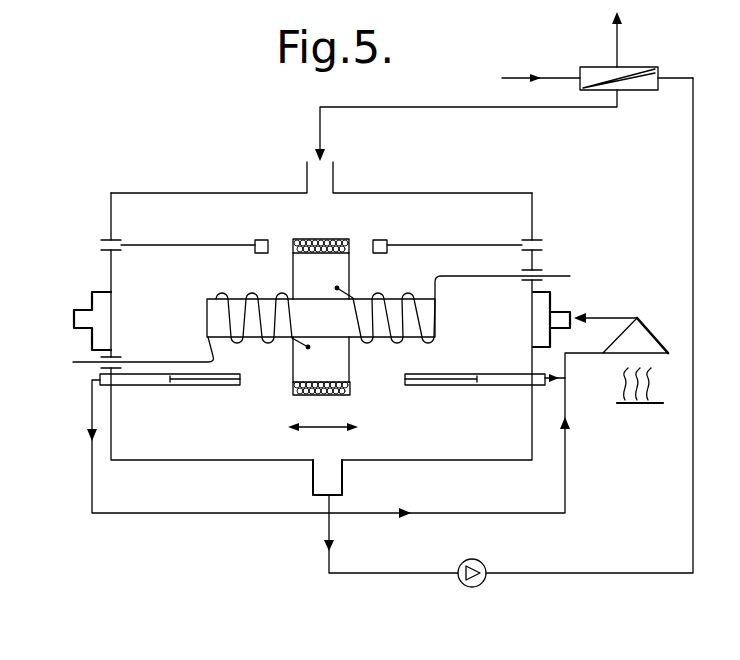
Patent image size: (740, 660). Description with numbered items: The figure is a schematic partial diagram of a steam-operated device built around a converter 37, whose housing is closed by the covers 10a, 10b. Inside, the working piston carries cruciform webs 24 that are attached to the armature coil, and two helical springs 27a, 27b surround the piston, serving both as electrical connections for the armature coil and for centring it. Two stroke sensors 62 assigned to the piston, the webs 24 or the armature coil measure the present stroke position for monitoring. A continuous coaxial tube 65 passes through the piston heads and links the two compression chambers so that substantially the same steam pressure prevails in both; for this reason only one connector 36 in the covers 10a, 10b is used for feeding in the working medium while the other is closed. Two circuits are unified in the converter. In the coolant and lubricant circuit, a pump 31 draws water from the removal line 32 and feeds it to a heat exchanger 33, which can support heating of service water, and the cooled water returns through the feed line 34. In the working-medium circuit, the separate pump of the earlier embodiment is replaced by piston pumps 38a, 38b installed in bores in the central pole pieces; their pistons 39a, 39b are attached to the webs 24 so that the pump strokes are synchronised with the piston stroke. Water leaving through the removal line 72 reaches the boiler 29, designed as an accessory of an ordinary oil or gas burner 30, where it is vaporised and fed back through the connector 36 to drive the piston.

The converter 37 is at (122, 181).
The feed line 34 is at (327, 183).
The heat exchanger 33 is at (653, 75).
The pump 31 is at (482, 586).
The removal line 32 is at (335, 477).
The stroke sensors 62 is at (258, 240).
The coaxial tube 65 is at (303, 240).
The webs 24 is at (342, 359).
The spring 27a is at (80, 365).
The spring 27b is at (458, 277).
The cover 10a is at (100, 297).
The cover 10b is at (545, 300).
The connector 36 is at (563, 313).
The boiler 29 is at (647, 340).
The oil or gas burner 30 is at (643, 405).
The piston pump 38a is at (180, 387).
The piston pump 38b is at (442, 391).
The piston 39a is at (255, 386).
The piston 39b is at (377, 384).
The removal line 72 is at (567, 456).